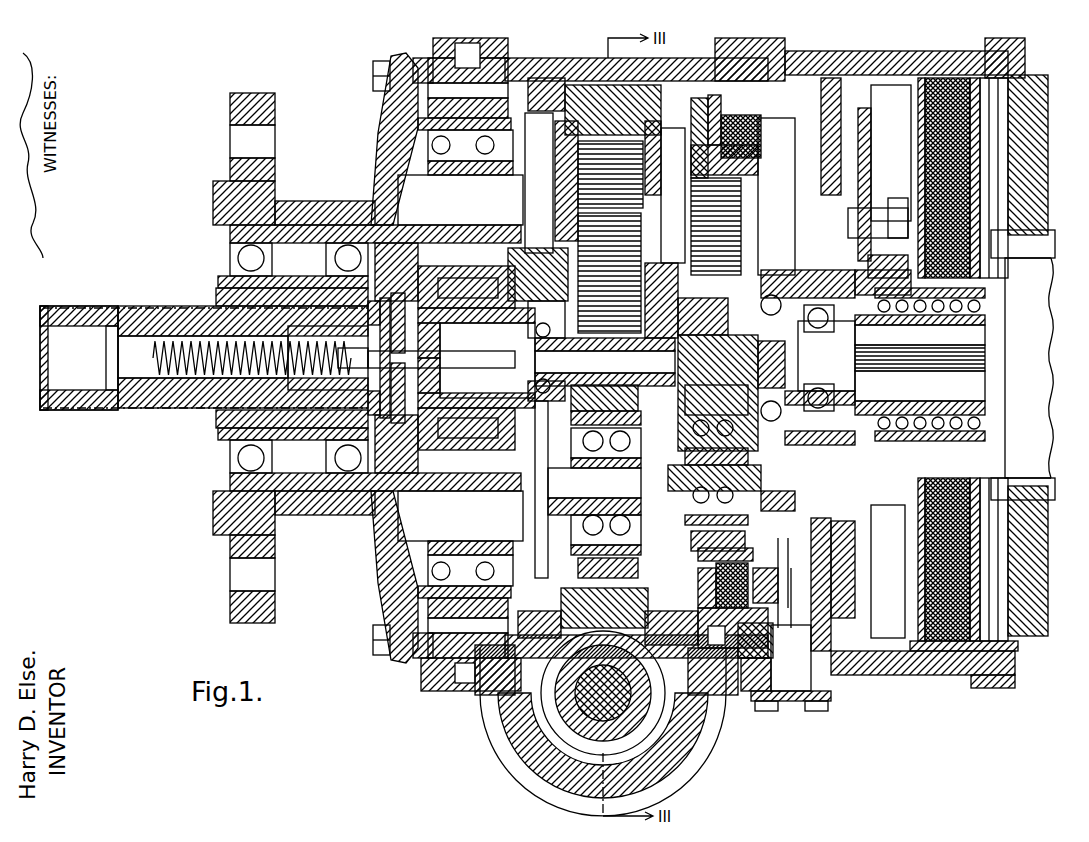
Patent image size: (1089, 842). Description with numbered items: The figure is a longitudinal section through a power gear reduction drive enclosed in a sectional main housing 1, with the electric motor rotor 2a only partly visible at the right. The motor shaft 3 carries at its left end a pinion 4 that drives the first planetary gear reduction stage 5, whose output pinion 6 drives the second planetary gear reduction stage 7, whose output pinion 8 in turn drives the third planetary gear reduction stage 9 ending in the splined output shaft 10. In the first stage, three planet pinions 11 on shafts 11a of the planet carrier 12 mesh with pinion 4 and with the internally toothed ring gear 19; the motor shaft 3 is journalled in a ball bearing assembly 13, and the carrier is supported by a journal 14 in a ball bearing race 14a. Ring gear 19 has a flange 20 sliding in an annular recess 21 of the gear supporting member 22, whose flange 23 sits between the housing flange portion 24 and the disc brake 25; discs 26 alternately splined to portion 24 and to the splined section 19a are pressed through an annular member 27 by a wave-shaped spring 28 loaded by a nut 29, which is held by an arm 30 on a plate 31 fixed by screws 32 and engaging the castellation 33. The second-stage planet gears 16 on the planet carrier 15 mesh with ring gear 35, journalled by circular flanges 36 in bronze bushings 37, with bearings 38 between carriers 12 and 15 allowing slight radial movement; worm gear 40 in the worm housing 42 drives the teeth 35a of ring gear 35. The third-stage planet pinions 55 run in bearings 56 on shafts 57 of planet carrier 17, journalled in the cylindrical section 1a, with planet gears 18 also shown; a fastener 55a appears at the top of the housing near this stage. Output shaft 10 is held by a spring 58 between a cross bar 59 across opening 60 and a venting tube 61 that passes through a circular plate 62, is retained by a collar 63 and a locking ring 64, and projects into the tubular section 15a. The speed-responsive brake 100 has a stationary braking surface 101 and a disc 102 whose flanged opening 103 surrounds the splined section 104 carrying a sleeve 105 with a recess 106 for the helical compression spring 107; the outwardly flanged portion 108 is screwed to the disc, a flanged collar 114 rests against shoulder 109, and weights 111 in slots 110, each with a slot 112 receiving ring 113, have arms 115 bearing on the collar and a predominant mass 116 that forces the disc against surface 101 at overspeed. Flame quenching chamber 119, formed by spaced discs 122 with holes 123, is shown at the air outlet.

The main housing 1 is at (885, 45).
The cylindrical section 1a is at (322, 195).
The rotor 2a is at (1043, 437).
The motor shaft 3 is at (990, 322).
The pinion 4 is at (775, 372).
The first planetary gear reduction stage 5 is at (767, 195).
The pinion 6 is at (622, 340).
The second planetary gear reduction stage 7 is at (625, 160).
The pinion 8 is at (517, 300).
The third planetary gear reduction stage 9 is at (533, 153).
The splined output shaft 10 is at (160, 298).
The planet pinions 11 is at (700, 225).
The shafts 11a is at (680, 260).
The planet carrier 12 is at (655, 260).
The ball bearing assembly 13 is at (790, 315).
The journal 14 is at (745, 235).
The ball bearing race 14a is at (757, 255).
The planet carrier 15 is at (550, 245).
The tubular section 15a is at (455, 315).
The planet gears 16 is at (590, 225).
The planet carrier 17 is at (385, 225).
The planet gears 18 is at (410, 98).
The ring gear 19 is at (695, 190).
The splined section 19a is at (737, 160).
The flange 20 is at (688, 135).
The annular recess 21 is at (690, 150).
The gear supporting member 22 is at (688, 115).
The flange 23 is at (715, 85).
The inwardly flanged portion 24 is at (675, 65).
The brake assembly 25 is at (760, 75).
The discs 26 is at (775, 122).
The annular member 27 is at (778, 157).
The wave-shaped spring 28 is at (778, 140).
The nut 29 is at (775, 106).
The arm 30 is at (803, 648).
The plate 31 is at (823, 690).
The screws 32 is at (800, 703).
The castellation 33 is at (795, 605).
The ring gear 35 is at (560, 158).
The teeth 35a is at (560, 178).
The circular flanges 36 is at (550, 600).
The bronze bushings 37 is at (555, 60).
The bearings 38 is at (525, 322).
The worm gear 40 is at (555, 700).
The worm housing 42 is at (700, 745).
The planet pinions 55 is at (375, 295).
The nut 55a is at (415, 52).
The bearings 56 is at (425, 150).
The shafts 57 is at (470, 160).
The spring 58 is at (198, 335).
The cross bar 59 is at (105, 315).
The opening 60 is at (40, 380).
The venting tube 61 is at (478, 355).
The circular plate 62 is at (360, 325).
The collar 63 is at (360, 365).
The locking ring 64 is at (380, 415).
The speed-responsive brake 100 is at (896, 137).
The stationary braking surface 101 is at (822, 170).
The disc 102 is at (856, 113).
The flanged opening 103 is at (887, 310).
The splined section 104 is at (980, 340).
The sleeve 105 is at (980, 300).
The recess 106 is at (965, 312).
The helical compression spring 107 is at (925, 312).
The outwardly flanged portion 108 is at (885, 500).
The shoulder 109 is at (848, 378).
The slots 110 is at (860, 255).
The weights 111 is at (893, 225).
The slot 112 is at (862, 225).
The ring 113 is at (850, 215).
The flanged collar 114 is at (845, 335).
The arm 115 is at (855, 245).
The predominant mass 116 is at (890, 200).
The chamber 119 is at (935, 75).
The discs 122 is at (915, 143).
The holes 123 is at (915, 170).